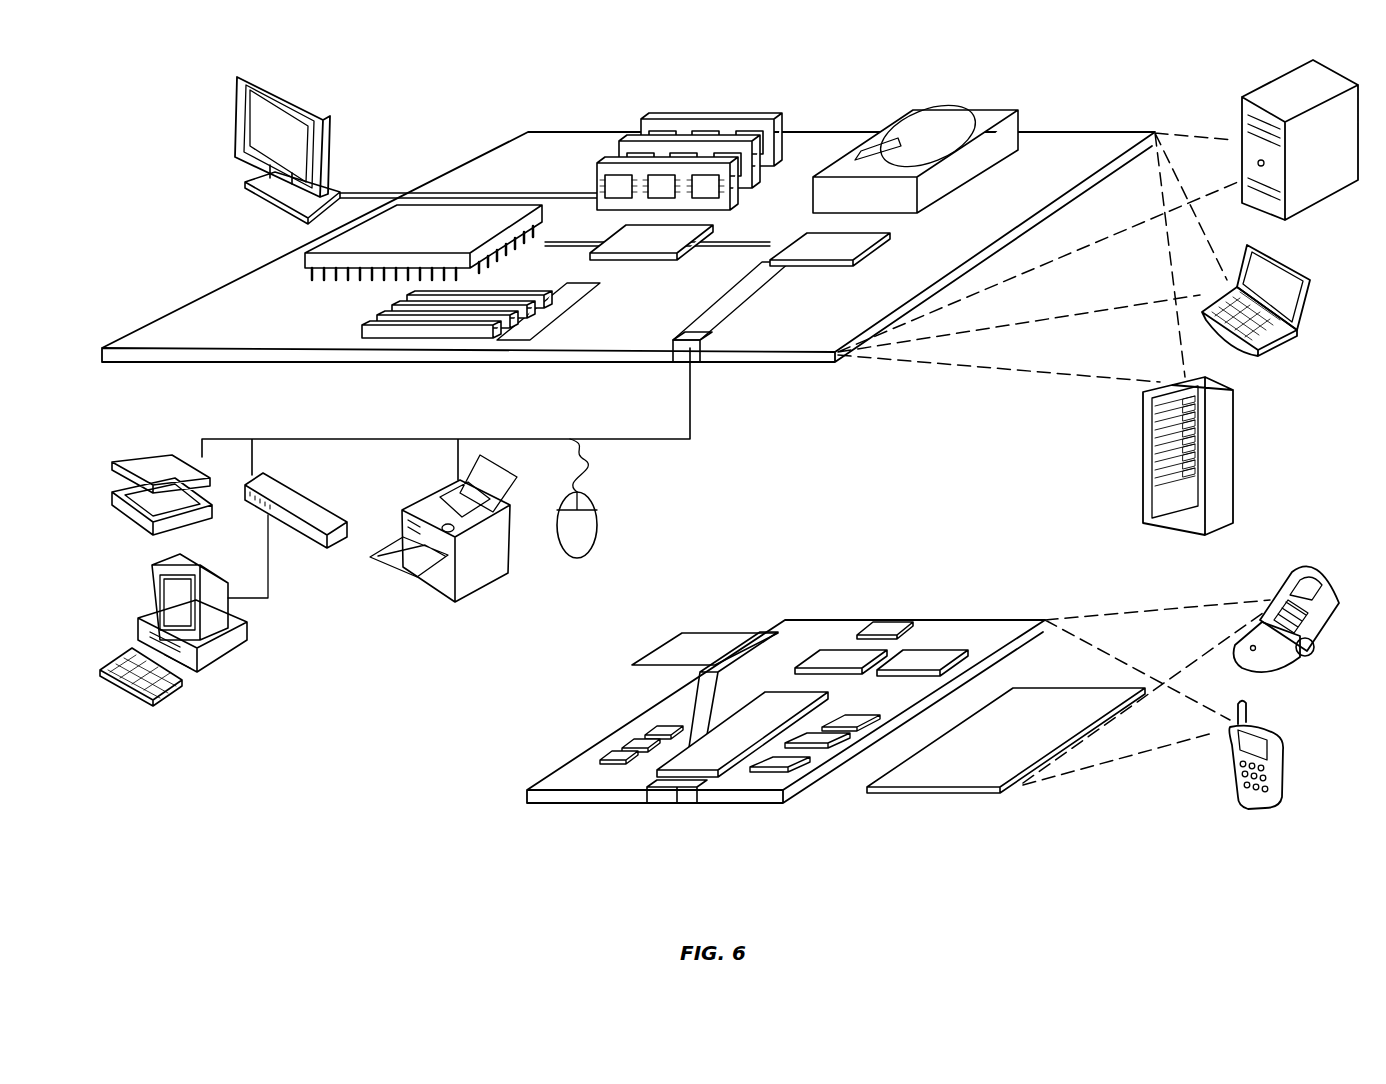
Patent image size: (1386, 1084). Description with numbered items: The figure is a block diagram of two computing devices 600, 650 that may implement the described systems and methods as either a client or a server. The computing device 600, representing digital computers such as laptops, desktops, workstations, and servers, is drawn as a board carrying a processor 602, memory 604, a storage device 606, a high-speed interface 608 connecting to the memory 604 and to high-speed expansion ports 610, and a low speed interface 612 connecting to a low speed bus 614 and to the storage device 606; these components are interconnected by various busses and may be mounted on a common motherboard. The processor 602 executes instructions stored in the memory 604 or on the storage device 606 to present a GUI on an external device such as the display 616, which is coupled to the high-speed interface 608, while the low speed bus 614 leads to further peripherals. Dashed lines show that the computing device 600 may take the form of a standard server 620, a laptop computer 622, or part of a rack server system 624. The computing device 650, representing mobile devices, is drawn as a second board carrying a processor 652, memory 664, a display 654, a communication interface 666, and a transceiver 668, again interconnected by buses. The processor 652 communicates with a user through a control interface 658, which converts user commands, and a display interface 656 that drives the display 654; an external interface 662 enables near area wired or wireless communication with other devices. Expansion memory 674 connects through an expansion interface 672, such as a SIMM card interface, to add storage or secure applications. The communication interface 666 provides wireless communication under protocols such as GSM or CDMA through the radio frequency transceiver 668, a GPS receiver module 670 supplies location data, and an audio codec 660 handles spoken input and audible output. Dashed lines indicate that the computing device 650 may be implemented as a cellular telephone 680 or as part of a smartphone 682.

The computing device 600 is at (437, 101).
The processor 602 is at (305, 258).
The memory 604 is at (660, 123).
The storage device 606 is at (913, 112).
The high-speed interface 608 is at (627, 237).
The high-speed expansion ports 610 is at (377, 318).
The low speed interface 612 is at (808, 243).
The low speed bus 614 is at (690, 350).
The display 616 is at (236, 76).
The standard server 620 is at (1241, 116).
The laptop computer 622 is at (1308, 274).
The rack server system 624 is at (1143, 482).
The computing device 650 is at (496, 805).
The processor 652 is at (712, 757).
The display 654 is at (960, 773).
The display interface 656 is at (775, 770).
The control interface 658 is at (812, 748).
The audio codec 660 is at (845, 733).
The external interface 662 is at (675, 788).
The memory 664 is at (623, 750).
The communication interface 666 is at (830, 662).
The transceiver 668 is at (923, 662).
The GPS receiver module 670 is at (893, 622).
The expansion interface 672 is at (765, 632).
The expansion memory 674 is at (685, 632).
The cellular telephone 680 is at (1292, 568).
The smartphone 682 is at (1223, 763).